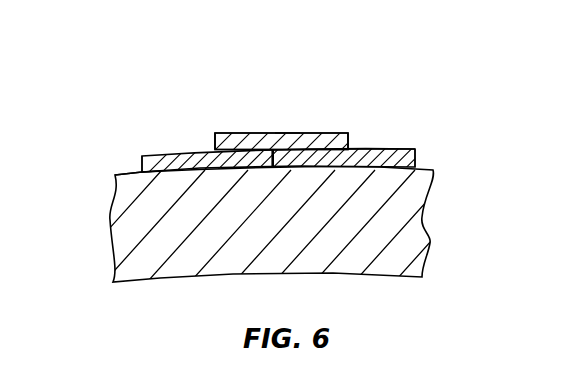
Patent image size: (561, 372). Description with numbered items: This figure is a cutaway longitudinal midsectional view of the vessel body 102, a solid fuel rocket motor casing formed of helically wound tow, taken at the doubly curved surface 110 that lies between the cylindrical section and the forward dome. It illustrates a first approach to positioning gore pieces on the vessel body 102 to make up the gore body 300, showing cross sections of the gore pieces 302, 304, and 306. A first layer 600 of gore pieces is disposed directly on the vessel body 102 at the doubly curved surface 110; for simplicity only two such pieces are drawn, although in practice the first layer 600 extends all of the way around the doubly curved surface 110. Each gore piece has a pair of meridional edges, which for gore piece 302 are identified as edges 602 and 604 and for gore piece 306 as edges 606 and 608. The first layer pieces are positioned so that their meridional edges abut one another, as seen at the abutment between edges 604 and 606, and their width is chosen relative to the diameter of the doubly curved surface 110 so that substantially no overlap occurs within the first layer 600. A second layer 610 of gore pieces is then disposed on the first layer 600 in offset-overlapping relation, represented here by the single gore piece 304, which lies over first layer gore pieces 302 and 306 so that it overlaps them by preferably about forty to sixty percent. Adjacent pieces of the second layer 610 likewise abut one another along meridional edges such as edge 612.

The vessel body 102 is at (408, 185).
The doubly curved surface 110 is at (125, 173).
The gore body 300 is at (242, 121).
The gore piece 302 is at (184, 150).
The gore piece 304 is at (315, 132).
The gore piece 306 is at (398, 149).
The first layer 600 is at (168, 152).
The meridional edge 602 is at (138, 172).
The meridional edge 604 is at (272, 149).
The meridional edge 606 is at (288, 132).
The meridional edge 608 is at (415, 159).
The second layer 610 is at (338, 134).
The meridional edge 612 is at (214, 134).